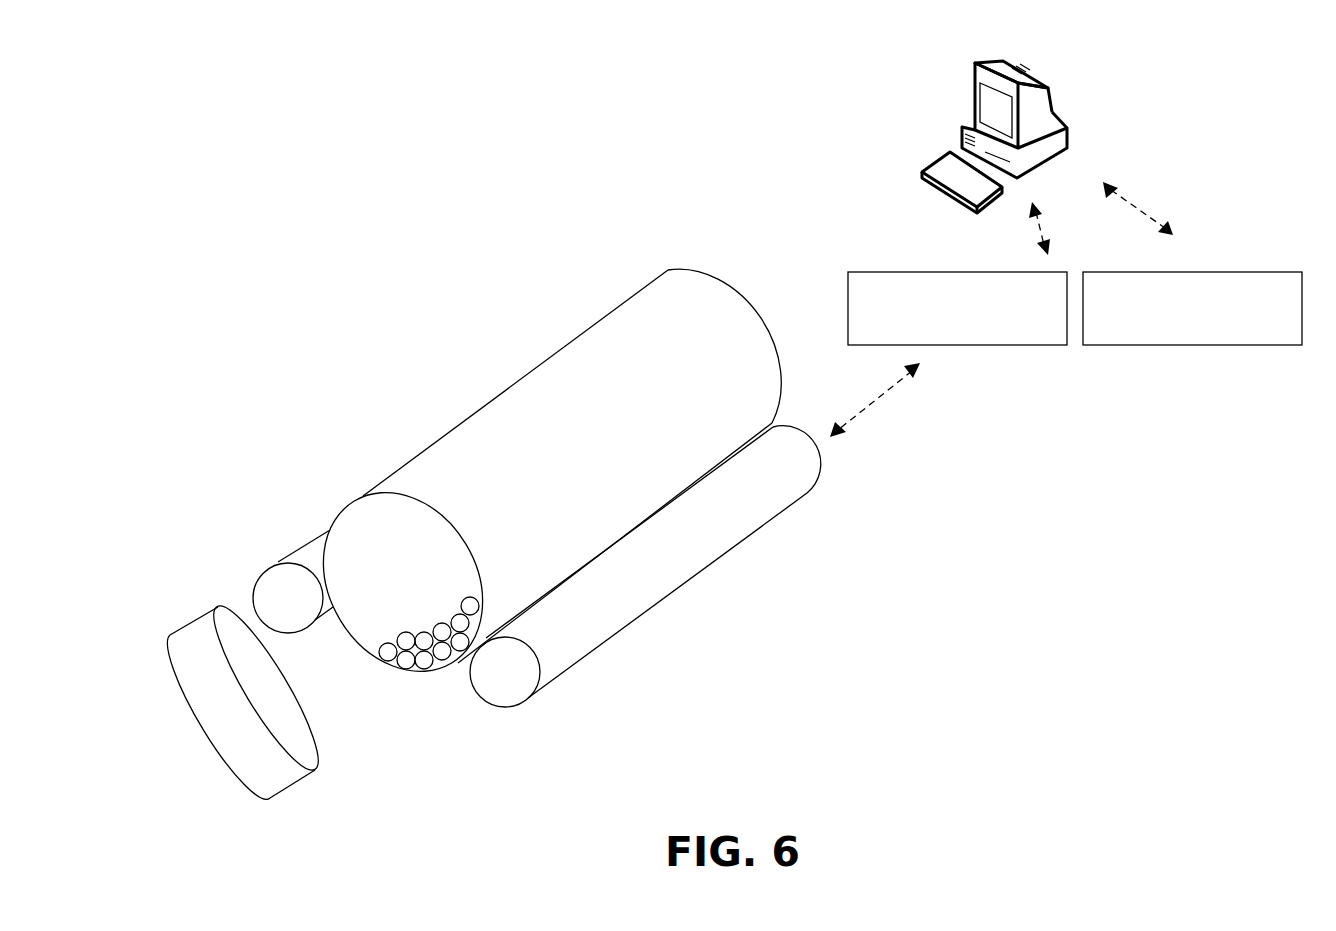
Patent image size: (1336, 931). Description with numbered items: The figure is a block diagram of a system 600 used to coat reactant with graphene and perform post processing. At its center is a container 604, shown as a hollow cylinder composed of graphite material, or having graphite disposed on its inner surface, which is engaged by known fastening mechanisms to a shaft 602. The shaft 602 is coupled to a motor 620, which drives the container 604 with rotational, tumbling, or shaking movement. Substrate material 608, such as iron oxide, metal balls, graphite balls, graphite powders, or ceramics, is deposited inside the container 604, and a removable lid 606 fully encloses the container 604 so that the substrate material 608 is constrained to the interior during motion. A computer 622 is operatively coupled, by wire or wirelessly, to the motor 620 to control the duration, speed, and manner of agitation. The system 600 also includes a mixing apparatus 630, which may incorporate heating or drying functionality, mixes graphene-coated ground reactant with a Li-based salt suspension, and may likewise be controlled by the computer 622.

The system 600 is at (290, 156).
The shaft 602 is at (677, 590).
The container 604 is at (360, 496).
The removable lid 606 is at (217, 607).
The substrate material 608 is at (424, 672).
The motor 620 is at (957, 308).
The computer 622 is at (973, 72).
The mixing apparatus 630 is at (1192, 308).